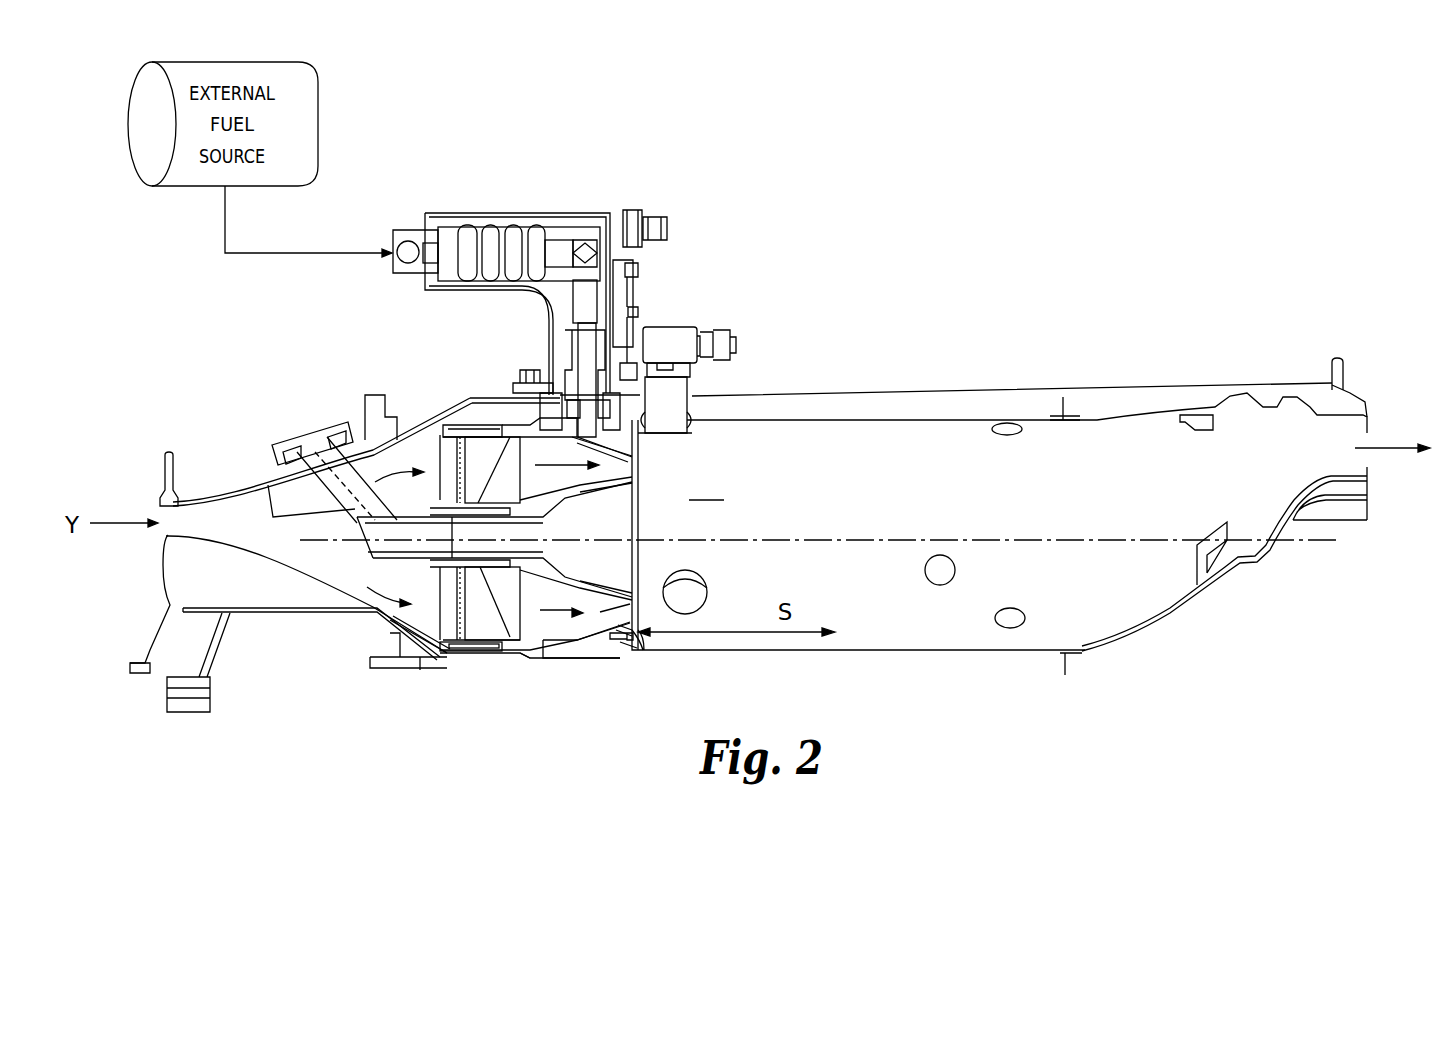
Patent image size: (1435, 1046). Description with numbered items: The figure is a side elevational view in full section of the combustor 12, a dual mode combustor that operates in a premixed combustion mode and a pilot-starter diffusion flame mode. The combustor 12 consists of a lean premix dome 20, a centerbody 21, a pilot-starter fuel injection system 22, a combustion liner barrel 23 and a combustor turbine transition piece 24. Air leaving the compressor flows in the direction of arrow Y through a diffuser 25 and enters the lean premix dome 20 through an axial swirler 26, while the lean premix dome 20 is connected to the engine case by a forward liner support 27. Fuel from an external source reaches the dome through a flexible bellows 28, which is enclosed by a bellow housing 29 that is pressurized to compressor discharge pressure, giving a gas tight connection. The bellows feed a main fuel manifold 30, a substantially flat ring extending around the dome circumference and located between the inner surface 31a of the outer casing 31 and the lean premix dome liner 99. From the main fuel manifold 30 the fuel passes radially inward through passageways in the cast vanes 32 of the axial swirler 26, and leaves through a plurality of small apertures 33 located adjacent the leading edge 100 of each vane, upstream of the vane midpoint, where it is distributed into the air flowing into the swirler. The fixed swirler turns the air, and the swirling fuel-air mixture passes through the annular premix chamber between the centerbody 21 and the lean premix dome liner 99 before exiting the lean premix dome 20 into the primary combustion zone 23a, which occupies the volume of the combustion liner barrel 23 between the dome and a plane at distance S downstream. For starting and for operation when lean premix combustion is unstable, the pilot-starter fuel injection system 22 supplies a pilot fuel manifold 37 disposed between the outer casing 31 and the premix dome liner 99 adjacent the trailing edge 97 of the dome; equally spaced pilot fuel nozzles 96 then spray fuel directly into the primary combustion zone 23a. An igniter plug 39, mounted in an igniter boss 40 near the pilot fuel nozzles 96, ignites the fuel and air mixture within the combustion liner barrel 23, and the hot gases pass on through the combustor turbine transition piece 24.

The combustor 12 is at (840, 323).
The lean premix dome 20 is at (518, 674).
The centerbody 21 is at (535, 530).
The pilot-starter fuel injection system 22 is at (623, 652).
The combustion liner barrel 23 is at (763, 453).
The primary combustion zone 23a is at (706, 488).
The combustor turbine transition piece 24 is at (1167, 613).
The diffuser 25 is at (220, 492).
The axial swirler 26 is at (480, 450).
The forward liner support 27 is at (312, 440).
The flexible bellows 28 is at (555, 224).
The bellow housing 29 is at (448, 212).
The main fuel manifold 30 is at (466, 644).
The outer casing 31 is at (500, 655).
The inner surface 31a is at (440, 652).
The cast vanes 32 is at (490, 627).
The apertures 33 is at (442, 466).
The pilot fuel manifold 37 is at (570, 650).
The igniter plug 39 is at (678, 326).
The igniter boss 40 is at (705, 385).
The pilot fuel nozzles 96 is at (630, 634).
The trailing edge 97 is at (638, 609).
The lean premix dome liner 99 is at (600, 622).
The leading edge 100 is at (448, 462).